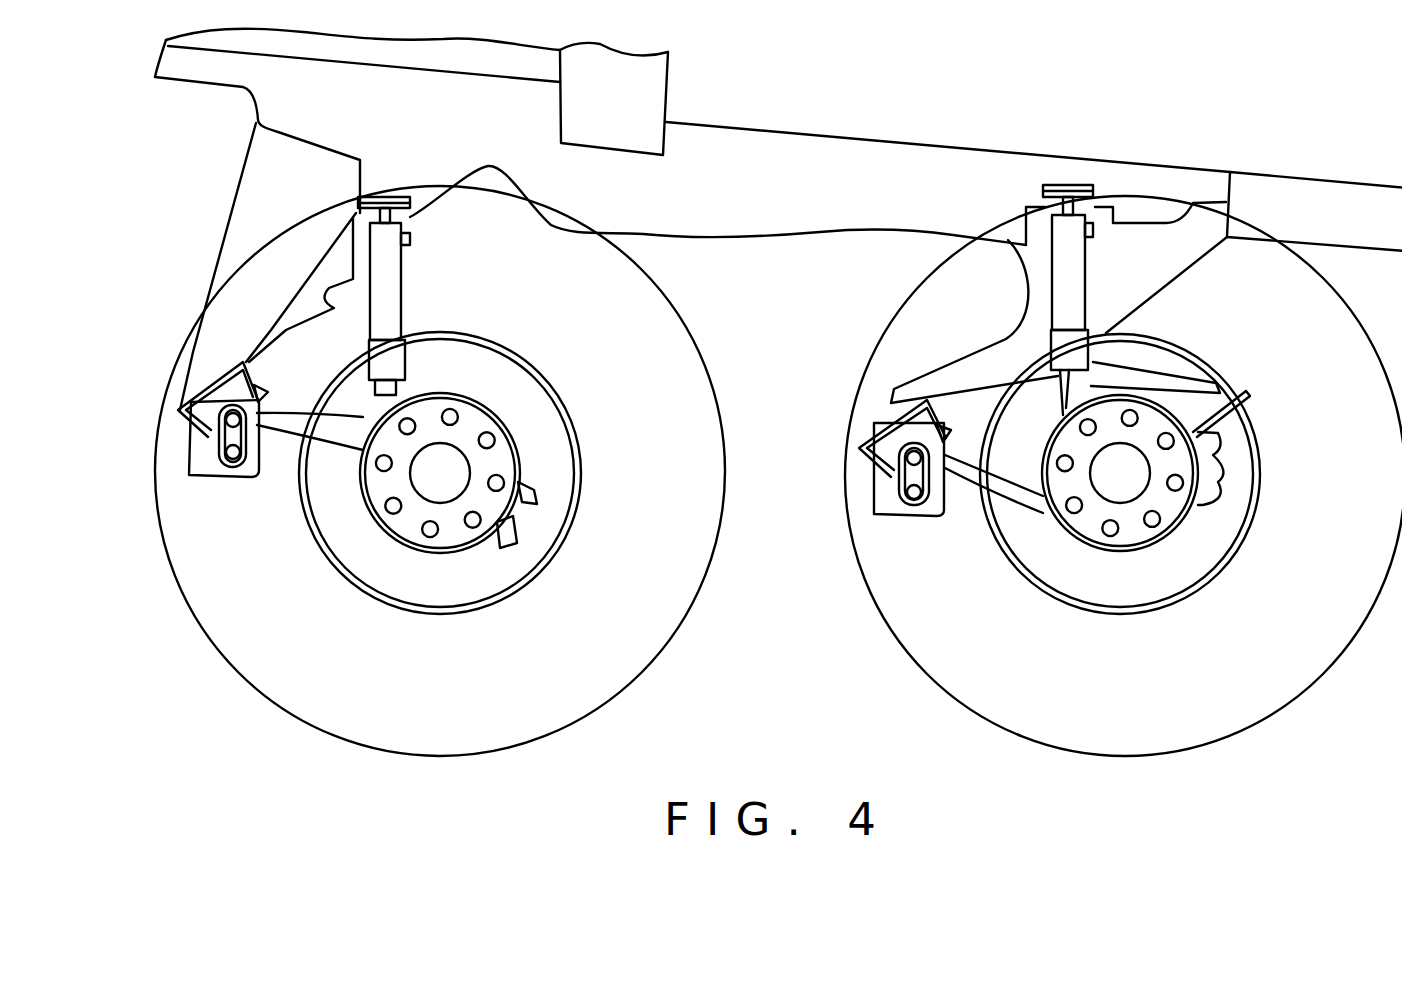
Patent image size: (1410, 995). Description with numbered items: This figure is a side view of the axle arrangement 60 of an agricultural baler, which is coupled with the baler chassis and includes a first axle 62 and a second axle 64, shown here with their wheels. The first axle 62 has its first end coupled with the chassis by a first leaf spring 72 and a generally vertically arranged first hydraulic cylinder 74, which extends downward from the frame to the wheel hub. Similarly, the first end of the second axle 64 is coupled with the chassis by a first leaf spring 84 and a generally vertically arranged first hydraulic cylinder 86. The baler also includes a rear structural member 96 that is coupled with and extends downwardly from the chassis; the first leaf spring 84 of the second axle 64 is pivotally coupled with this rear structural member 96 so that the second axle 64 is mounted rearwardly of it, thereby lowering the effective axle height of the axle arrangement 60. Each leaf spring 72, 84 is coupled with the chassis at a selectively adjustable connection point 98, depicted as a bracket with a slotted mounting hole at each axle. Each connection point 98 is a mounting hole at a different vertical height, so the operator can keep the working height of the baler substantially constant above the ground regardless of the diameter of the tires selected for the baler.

The axle arrangement 60 is at (845, 648).
The first axle 62 is at (433, 567).
The second axle 64 is at (1122, 572).
The first leaf spring 72 is at (284, 427).
The first hydraulic cylinder 74 is at (392, 283).
The first leaf spring 84 is at (970, 477).
The first hydraulic cylinder 86 is at (1074, 274).
The rear structural member 96 is at (969, 368).
The selectively adjustable connection point 98 is at (205, 427).